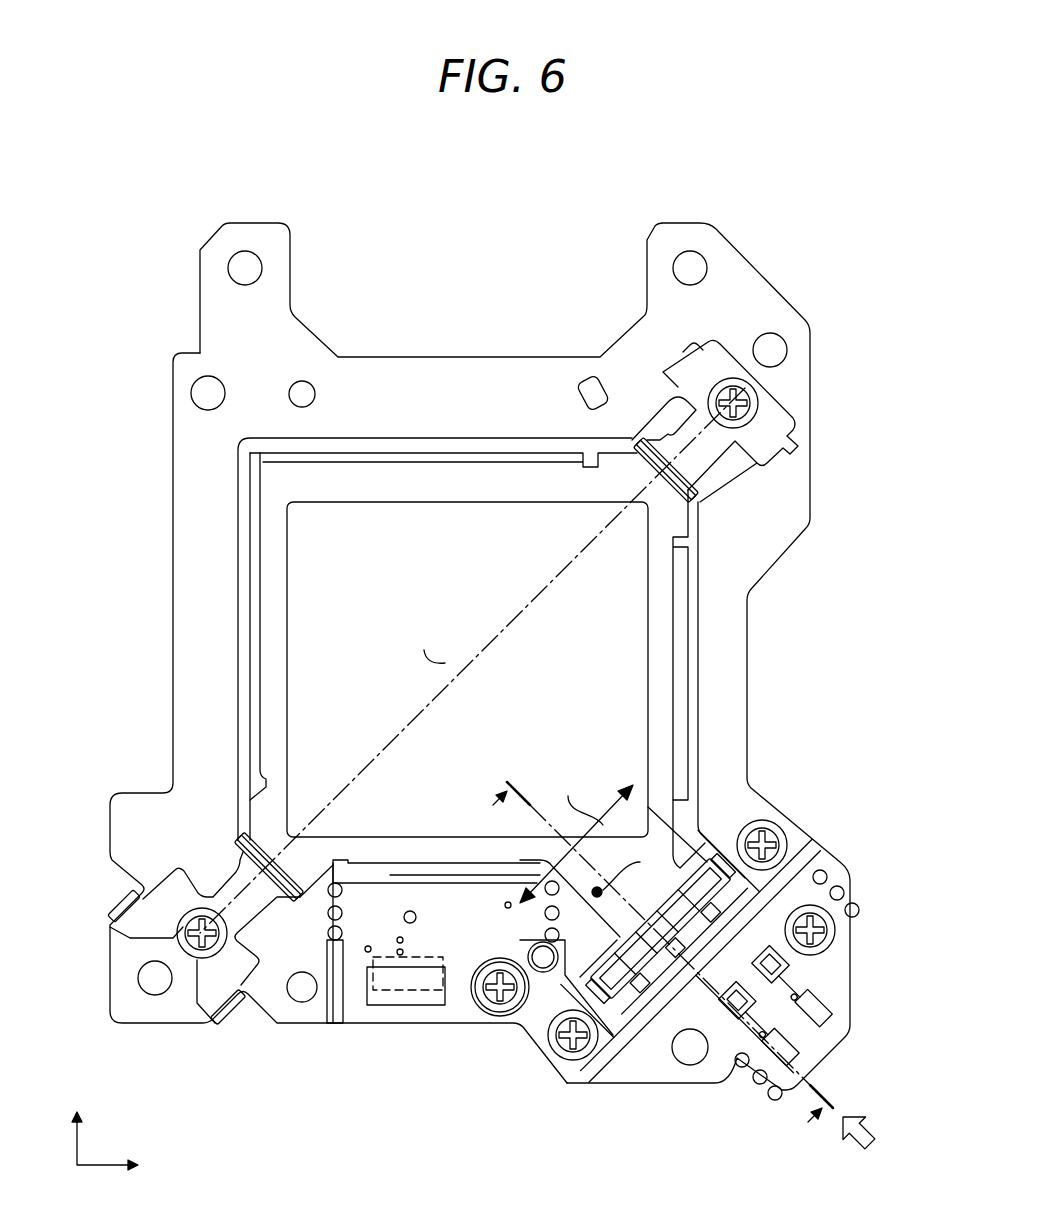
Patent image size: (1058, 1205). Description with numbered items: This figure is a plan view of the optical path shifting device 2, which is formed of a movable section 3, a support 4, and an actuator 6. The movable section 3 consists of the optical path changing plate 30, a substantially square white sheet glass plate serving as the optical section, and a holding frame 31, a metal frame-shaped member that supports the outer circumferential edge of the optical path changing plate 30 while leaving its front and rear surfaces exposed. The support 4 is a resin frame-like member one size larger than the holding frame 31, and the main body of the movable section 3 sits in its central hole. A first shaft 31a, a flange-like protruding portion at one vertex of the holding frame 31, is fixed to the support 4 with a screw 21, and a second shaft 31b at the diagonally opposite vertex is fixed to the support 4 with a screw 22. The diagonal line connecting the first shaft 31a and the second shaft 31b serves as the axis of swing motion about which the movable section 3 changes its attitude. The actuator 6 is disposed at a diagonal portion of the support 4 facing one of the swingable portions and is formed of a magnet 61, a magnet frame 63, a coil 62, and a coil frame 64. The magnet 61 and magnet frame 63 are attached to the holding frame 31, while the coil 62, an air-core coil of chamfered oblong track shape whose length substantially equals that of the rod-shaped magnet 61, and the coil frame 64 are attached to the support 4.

The optical path shifting device 2 is at (700, 192).
The movable section 3 is at (522, 296).
The support 4 is at (352, 372).
The screw 21 is at (745, 402).
The screw 22 is at (178, 924).
The optical path changing plate 30 is at (503, 530).
The holding frame 31 is at (443, 475).
The first shaft 31a is at (683, 437).
The second shaft 31b is at (235, 888).
The actuator 6 is at (923, 875).
The magnet 61 is at (717, 914).
The coil 62 is at (700, 942).
The magnet frame 63 is at (697, 886).
The coil frame 64 is at (713, 960).